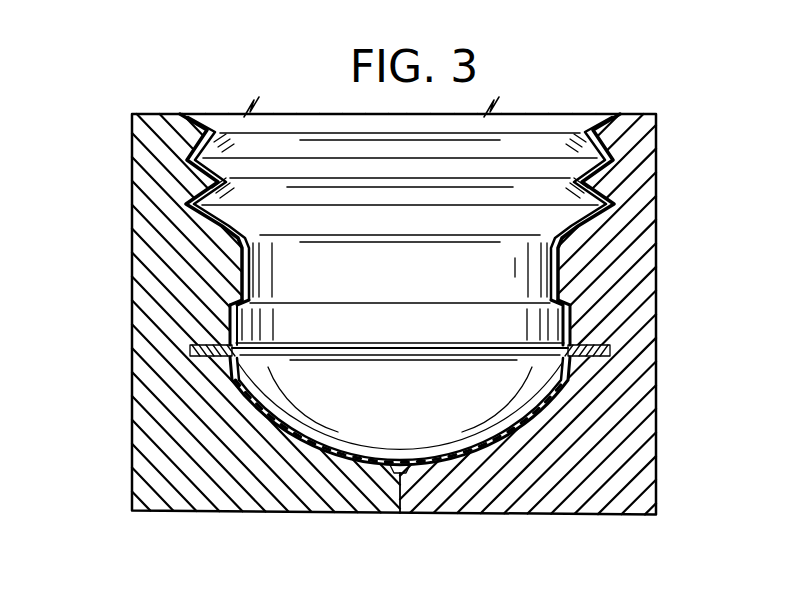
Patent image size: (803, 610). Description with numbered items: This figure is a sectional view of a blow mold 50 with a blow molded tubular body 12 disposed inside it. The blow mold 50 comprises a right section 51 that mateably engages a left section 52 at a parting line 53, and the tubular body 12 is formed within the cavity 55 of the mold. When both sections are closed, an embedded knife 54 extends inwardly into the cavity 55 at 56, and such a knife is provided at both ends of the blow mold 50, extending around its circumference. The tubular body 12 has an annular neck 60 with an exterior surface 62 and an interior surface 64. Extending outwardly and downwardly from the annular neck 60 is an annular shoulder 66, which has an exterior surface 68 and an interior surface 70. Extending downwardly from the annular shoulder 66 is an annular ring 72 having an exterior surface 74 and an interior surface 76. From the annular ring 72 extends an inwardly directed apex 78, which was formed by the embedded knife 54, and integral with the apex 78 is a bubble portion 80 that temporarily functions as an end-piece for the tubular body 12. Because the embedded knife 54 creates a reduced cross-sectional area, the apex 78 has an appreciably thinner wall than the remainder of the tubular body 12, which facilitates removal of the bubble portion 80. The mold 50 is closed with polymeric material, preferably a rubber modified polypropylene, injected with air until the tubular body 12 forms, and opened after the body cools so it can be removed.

The tubular body 12 is at (182, 223).
The blow mold 50 is at (126, 201).
The right section 51 is at (555, 493).
The left section 52 is at (215, 488).
The parting line 53 is at (398, 506).
The embedded knife 54 is at (198, 351).
The cavity 55 is at (540, 276).
The knife extension location 56 is at (236, 372).
The annular neck 60 is at (228, 280).
The exterior surface 62 is at (235, 263).
The interior surface 64 is at (268, 264).
The annular shoulder 66 is at (564, 299).
The exterior surface 68 is at (231, 298).
The interior surface 70 is at (552, 303).
The annular ring 72 is at (211, 331).
The exterior surface 74 is at (567, 310).
The interior surface 76 is at (548, 347).
The apex 78 is at (262, 343).
The bubble portion 80 is at (430, 458).